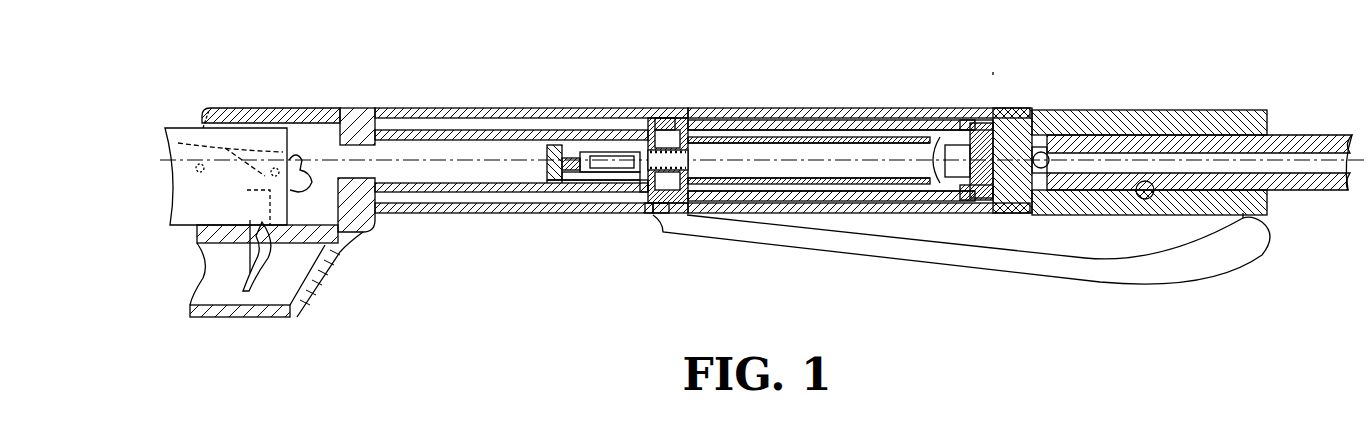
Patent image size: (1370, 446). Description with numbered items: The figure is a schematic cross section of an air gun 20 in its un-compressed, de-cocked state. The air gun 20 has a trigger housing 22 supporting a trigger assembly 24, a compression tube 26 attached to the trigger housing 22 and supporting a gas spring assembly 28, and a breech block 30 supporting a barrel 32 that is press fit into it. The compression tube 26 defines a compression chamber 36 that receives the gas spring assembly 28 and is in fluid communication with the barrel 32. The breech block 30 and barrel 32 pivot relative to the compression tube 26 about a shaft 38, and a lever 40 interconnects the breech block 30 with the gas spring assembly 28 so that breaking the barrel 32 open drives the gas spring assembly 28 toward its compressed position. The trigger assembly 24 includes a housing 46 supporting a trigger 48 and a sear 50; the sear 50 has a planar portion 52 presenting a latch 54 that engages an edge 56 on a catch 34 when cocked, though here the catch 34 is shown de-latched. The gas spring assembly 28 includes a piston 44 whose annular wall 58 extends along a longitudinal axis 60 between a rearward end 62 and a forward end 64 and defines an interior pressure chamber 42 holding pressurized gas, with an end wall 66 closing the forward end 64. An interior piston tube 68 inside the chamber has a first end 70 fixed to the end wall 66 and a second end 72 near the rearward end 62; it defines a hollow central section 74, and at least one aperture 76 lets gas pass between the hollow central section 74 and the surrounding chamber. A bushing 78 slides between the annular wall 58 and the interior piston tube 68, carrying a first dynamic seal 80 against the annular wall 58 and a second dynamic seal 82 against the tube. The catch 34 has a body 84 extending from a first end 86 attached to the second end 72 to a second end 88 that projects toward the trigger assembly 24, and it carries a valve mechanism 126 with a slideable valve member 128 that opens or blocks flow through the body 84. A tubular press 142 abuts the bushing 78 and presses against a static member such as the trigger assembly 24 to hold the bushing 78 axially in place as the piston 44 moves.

The air gun 20 is at (998, 70).
The trigger housing 22 is at (289, 108).
The trigger assembly 24 is at (180, 229).
The compression tube 26 is at (545, 108).
The gas spring assembly 28 is at (755, 109).
The breech block 30 is at (1170, 112).
The barrel 32 is at (1320, 140).
The catch 34 is at (590, 152).
The compression chamber 36 is at (983, 120).
The shaft 38 is at (1139, 200).
The lever 40 is at (1100, 275).
The interior pressure chamber 42 is at (863, 130).
The piston 44 is at (820, 137).
The housing 46 is at (167, 183).
The trigger 48 is at (245, 258).
The sear 50 is at (203, 126).
The planar portion 52 is at (306, 172).
The latch 54 is at (297, 162).
The edge 56 is at (560, 192).
The annular wall 58 is at (705, 120).
The longitudinal axis 60 is at (1348, 195).
The rearward end 62 is at (641, 130).
The forward end 64 is at (980, 120).
The end wall 66 is at (1028, 145).
The interior piston tube 68 is at (857, 190).
The first end 70 is at (980, 200).
The second end 72 is at (636, 200).
The hollow central section 74 is at (778, 168).
The aperture 76 is at (935, 183).
The bushing 78 is at (666, 118).
The first dynamic seal 80 is at (672, 213).
The second dynamic seal 82 is at (656, 213).
The body 84 is at (593, 190).
The first end 86 is at (695, 154).
The second end 88 is at (547, 145).
The valve mechanism 126 is at (612, 184).
The valve member 128 is at (620, 156).
The tubular press 142 is at (443, 192).